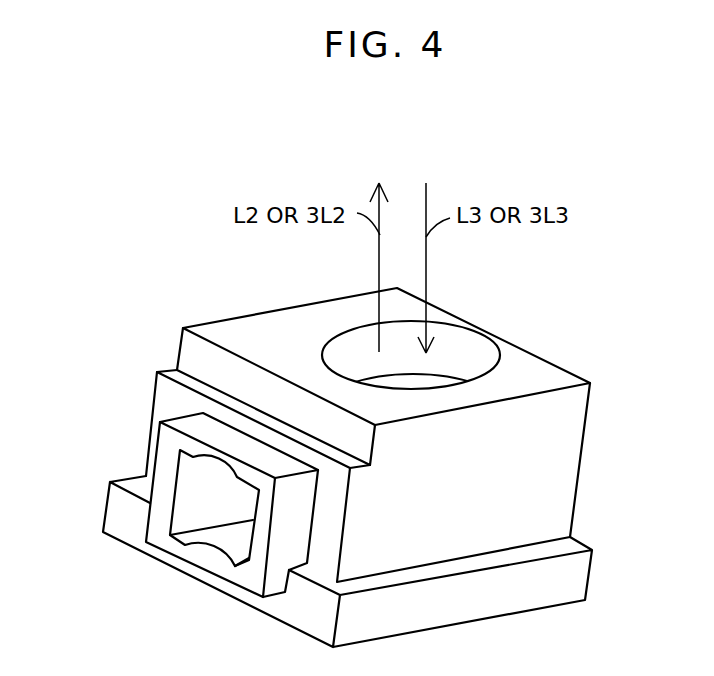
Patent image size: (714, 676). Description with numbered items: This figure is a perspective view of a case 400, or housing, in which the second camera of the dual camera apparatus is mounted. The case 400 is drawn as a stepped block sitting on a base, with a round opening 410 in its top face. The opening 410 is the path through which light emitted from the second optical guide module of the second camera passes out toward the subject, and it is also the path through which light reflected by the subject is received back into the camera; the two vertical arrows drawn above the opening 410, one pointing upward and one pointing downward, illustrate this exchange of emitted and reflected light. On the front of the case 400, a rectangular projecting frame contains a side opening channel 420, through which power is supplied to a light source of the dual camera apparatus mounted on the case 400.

The case 400 is at (540, 367).
The opening 410 is at (326, 339).
The side opening channel 420 is at (199, 505).